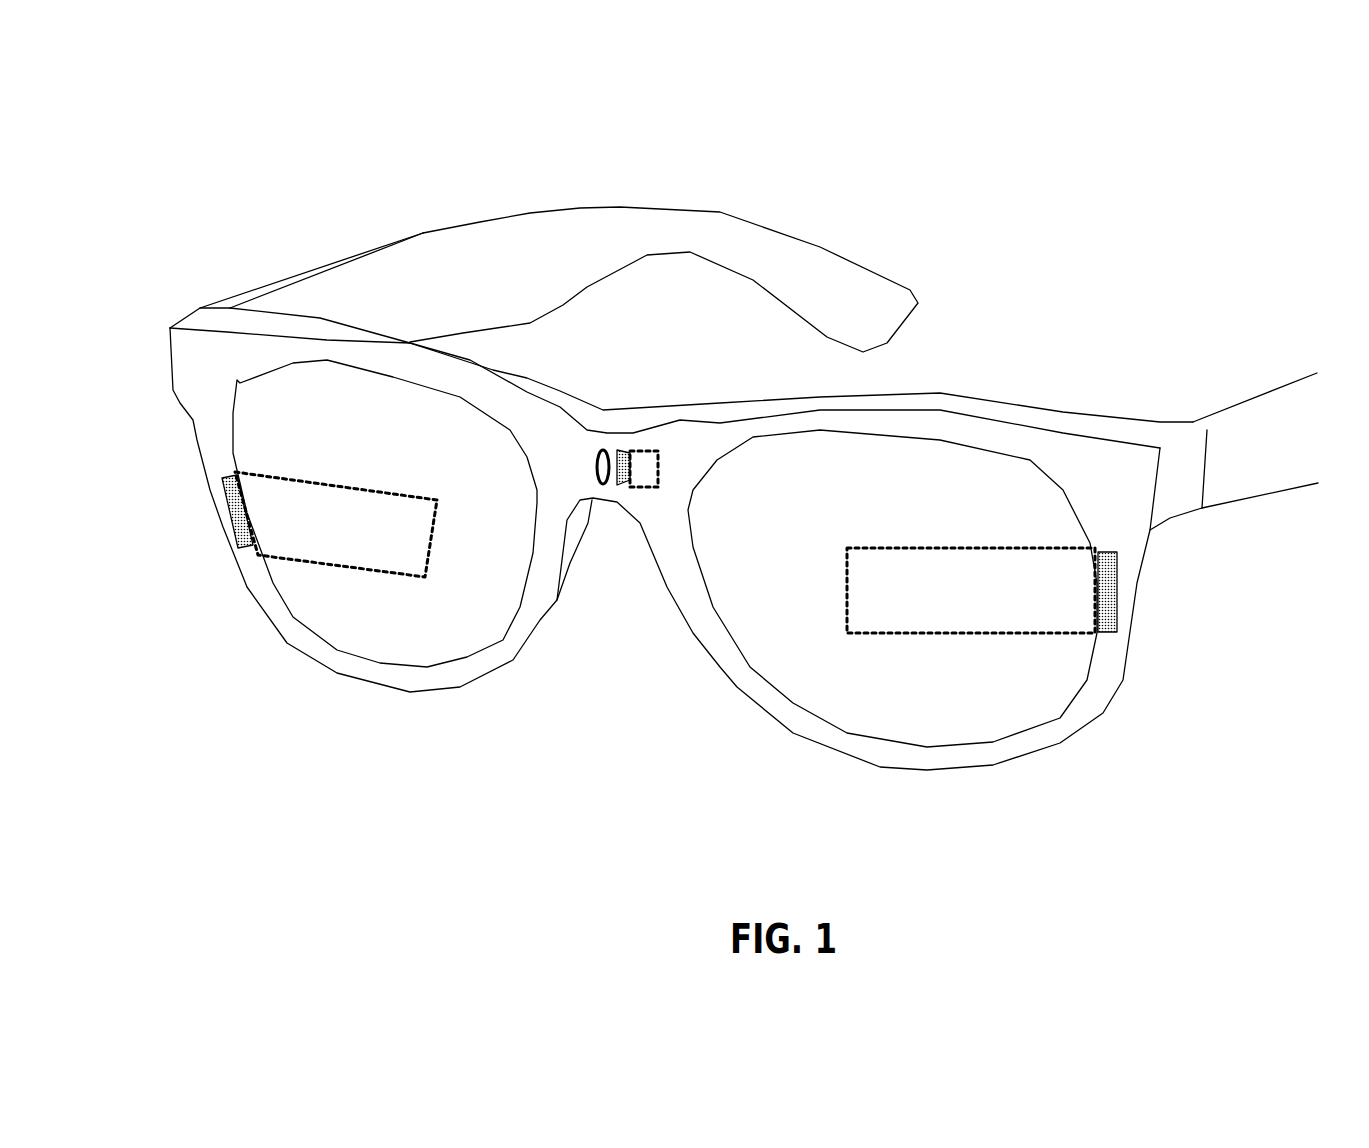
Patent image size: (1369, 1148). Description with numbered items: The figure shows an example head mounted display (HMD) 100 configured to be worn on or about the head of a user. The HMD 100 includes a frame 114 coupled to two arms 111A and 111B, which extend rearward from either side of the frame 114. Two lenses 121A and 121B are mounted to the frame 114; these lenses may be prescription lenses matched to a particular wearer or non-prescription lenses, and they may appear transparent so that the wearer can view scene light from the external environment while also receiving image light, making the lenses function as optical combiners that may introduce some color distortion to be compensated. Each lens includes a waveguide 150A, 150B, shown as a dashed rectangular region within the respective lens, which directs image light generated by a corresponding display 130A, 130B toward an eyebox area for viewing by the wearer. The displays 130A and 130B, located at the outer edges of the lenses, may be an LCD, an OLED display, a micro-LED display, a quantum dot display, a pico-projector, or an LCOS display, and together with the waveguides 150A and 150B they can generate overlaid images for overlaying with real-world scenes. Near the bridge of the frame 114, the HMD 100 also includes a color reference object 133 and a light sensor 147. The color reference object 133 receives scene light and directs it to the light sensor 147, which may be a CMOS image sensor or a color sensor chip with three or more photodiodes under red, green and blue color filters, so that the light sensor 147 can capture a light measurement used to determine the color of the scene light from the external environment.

The head mounted display 100 is at (1270, 68).
The arm 111A is at (525, 293).
The arm 111B is at (1279, 464).
The frame 114 is at (224, 374).
The lens 121A is at (502, 557).
The lens 121B is at (925, 471).
The display 130A is at (233, 520).
The display 130B is at (1117, 595).
The color reference object 133 is at (598, 465).
The light sensor 147 is at (658, 463).
The waveguide 150A is at (263, 475).
The waveguide 150B is at (1093, 637).